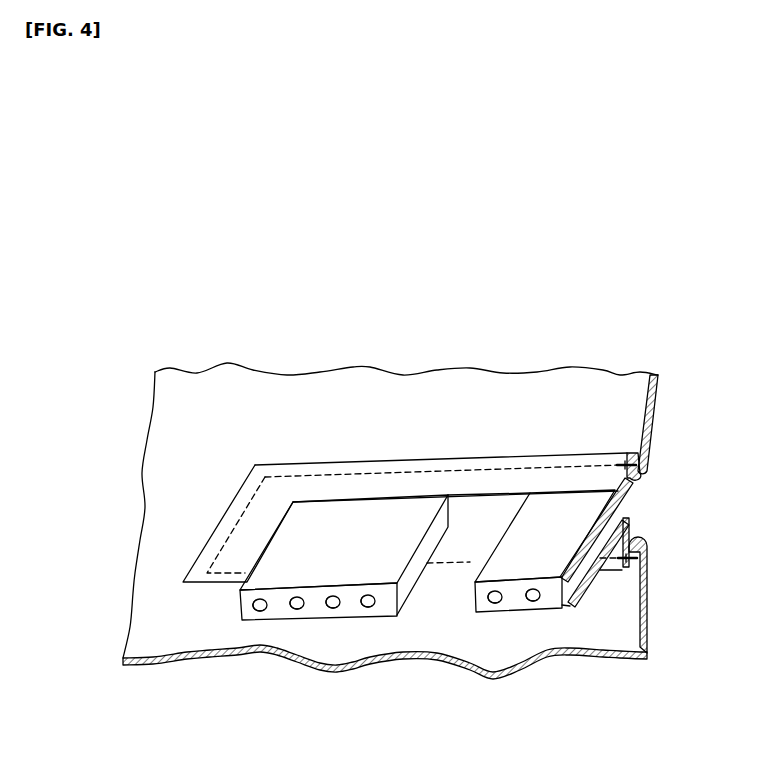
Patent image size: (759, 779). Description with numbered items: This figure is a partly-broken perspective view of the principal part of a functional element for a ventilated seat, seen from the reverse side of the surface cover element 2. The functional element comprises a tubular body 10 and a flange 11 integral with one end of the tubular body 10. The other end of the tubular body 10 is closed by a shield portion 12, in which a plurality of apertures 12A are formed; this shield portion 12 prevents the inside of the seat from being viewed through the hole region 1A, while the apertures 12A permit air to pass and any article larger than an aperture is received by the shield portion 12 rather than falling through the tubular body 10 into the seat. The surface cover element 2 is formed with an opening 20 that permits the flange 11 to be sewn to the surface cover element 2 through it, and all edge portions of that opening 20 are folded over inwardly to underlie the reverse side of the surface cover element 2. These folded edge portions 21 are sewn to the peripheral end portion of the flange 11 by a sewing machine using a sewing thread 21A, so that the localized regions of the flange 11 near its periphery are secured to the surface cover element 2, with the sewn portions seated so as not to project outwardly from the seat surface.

The hole region 1A is at (627, 507).
The surface cover element 2 is at (658, 387).
The tubular body 10 is at (317, 527).
The flange 11 is at (475, 487).
The shield portion 12 is at (272, 613).
The apertures 12A is at (302, 613).
The opening 20 is at (645, 485).
The bent portion 21 is at (637, 453).
The sewing thread 21A is at (247, 503).